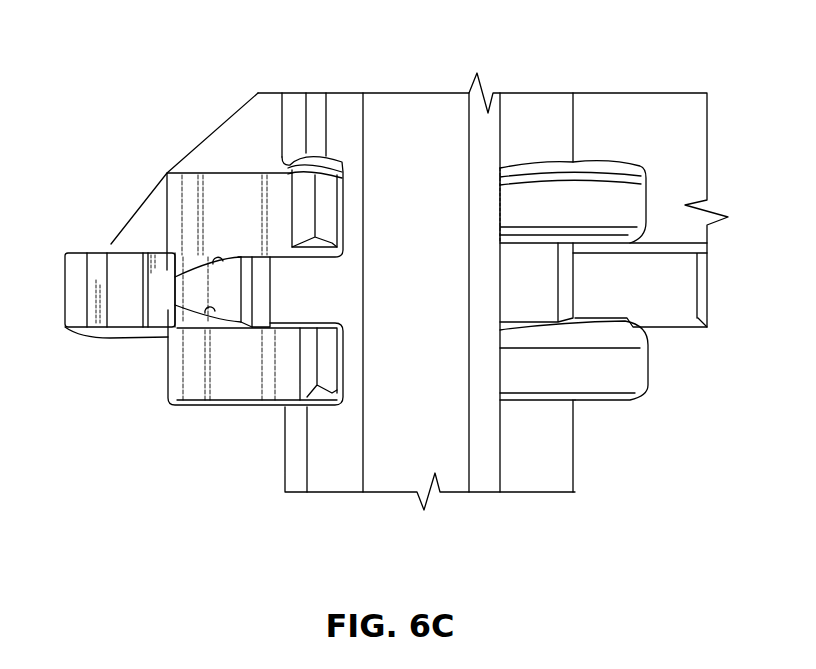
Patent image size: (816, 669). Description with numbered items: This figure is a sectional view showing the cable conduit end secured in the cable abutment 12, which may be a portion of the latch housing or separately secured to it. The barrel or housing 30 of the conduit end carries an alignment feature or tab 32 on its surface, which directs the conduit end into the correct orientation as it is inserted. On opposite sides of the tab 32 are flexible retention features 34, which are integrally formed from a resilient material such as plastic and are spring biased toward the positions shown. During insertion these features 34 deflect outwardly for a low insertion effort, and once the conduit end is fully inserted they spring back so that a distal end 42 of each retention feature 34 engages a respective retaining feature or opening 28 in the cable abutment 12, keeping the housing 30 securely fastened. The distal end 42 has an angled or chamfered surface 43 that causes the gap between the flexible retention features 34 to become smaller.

The cable abutment 12 is at (105, 327).
The retaining openings 28 is at (188, 293).
The housing 30 is at (412, 135).
The alignment tab 32 is at (292, 292).
The flexible retention features 34 is at (250, 203).
The distal end 42 is at (190, 257).
The chamfered surface 43 is at (218, 260).